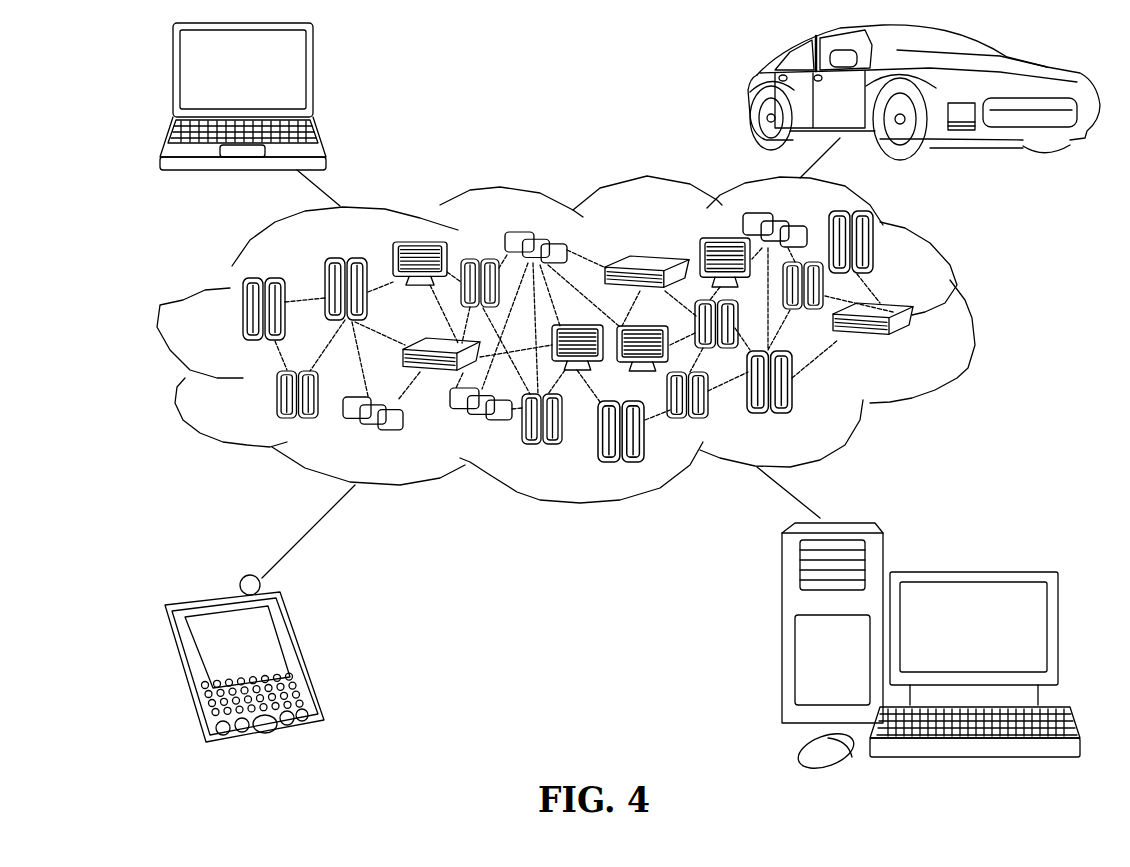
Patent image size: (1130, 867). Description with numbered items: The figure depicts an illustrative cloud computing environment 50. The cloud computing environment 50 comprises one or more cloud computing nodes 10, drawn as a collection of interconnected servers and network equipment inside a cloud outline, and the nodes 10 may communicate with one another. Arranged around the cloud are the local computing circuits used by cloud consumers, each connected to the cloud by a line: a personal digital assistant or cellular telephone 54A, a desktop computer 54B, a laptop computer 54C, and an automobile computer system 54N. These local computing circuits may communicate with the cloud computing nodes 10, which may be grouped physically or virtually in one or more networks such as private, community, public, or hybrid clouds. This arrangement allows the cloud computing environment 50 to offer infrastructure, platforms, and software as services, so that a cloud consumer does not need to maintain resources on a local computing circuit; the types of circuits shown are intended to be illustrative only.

The laptop computer 54C is at (312, 78).
The automobile computer system 54N is at (750, 90).
The personal digital assistant (PDA) or cellular telephone 54A is at (300, 656).
The desktop computer 54B is at (970, 570).
The cloud computing environment 50 is at (973, 320).
The cloud computing nodes 10 is at (913, 343).